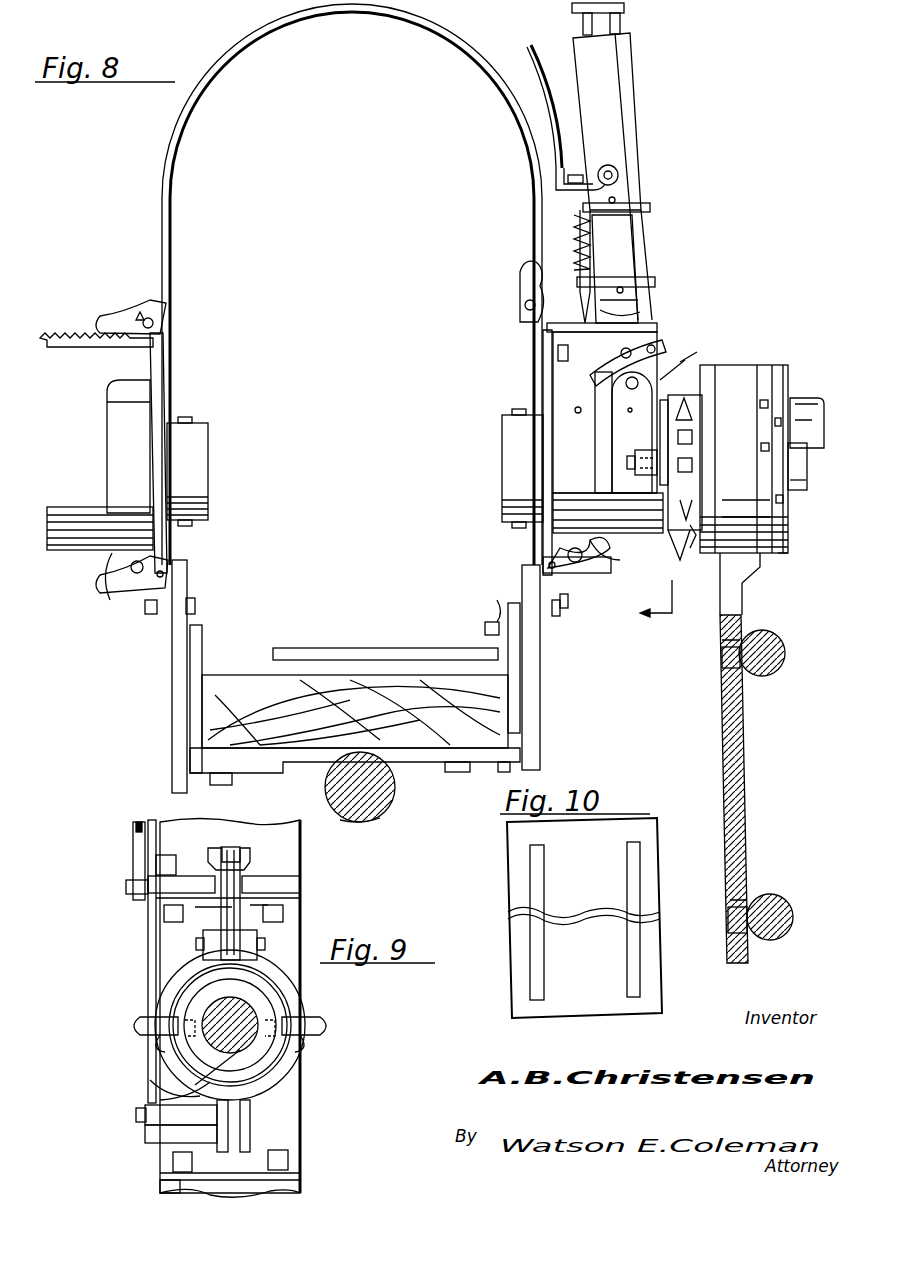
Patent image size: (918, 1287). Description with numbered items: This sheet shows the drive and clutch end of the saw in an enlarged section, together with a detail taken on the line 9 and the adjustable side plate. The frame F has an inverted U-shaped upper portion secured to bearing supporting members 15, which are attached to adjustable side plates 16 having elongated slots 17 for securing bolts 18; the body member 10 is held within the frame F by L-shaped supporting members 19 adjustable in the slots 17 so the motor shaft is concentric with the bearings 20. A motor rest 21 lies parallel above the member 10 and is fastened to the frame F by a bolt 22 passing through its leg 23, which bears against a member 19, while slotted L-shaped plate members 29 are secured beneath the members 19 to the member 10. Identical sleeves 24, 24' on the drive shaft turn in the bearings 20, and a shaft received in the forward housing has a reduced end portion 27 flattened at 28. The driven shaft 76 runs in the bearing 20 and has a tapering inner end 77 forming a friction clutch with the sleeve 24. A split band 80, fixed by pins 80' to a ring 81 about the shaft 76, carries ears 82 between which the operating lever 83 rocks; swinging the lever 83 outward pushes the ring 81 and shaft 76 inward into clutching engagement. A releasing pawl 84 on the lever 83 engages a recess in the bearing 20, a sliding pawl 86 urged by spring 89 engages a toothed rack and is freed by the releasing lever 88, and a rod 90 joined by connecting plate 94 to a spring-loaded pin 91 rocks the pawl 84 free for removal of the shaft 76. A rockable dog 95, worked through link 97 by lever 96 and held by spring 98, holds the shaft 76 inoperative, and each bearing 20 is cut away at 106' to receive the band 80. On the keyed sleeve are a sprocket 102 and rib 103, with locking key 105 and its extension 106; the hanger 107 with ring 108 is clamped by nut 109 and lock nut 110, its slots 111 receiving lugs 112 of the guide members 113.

In FIG. 8, the frame F is at (172, 222).
In FIG. 9, the frame F is at (300, 832).
In FIG. 8, the section line 9— 9 is at (672, 480).
In FIG. 8, the supporting frame or platform 10 is at (235, 675).
In FIG. 8, the bearing supporting members 15 is at (148, 616).
In FIG. 9, the bearing supporting members 15 is at (290, 1135).
In FIG. 8, the adjustable side plates 16 is at (540, 738).
In FIG. 10, the adjustable side plates 16 is at (590, 985).
In FIG. 9, the adjustable side plates 16 is at (302, 1178).
In FIG. 10, the elongated slots 17 is at (530, 875).
In FIG. 9, the elongated slots 17 is at (160, 1192).
In FIG. 8, the securing bolts 18 is at (570, 600).
In FIG. 8, the L-shaped supporting members 19 is at (190, 693).
In FIG. 8, the bearings 20 is at (75, 560).
In FIG. 9, the bearings 20 is at (195, 1083).
In FIG. 8, the motor rest 21 is at (360, 648).
In FIG. 8, the bolt 22 is at (485, 630).
In FIG. 8, the leg or flange 23 is at (481, 607).
In FIG. 8, the sleeve 24 is at (502, 468).
In FIG. 8, the sleeve 24' is at (188, 453).
In FIG. 8, the reduced outer end portion 27 is at (380, 822).
In FIG. 8, the flattened upper surface 28 is at (395, 780).
In FIG. 8, the adjustable L-shaped plate members 29 is at (465, 762).
In FIG. 8, the driven shaft 76 is at (810, 458).
In FIG. 9, the driven shaft 76 is at (255, 1008).
In FIG. 8, the inner end 77 is at (600, 485).
In FIG. 8, the split collar or band 80 is at (590, 432).
In FIG. 9, the split collar or band 80 is at (207, 1025).
In FIG. 8, the securing pins 80' is at (610, 463).
In FIG. 9, the securing pins 80' is at (228, 1037).
In FIG. 8, the ring 81 is at (660, 438).
In FIG. 9, the ring 81 is at (280, 1080).
In FIG. 8, the upstanding ears 82 is at (668, 400).
In FIG. 8, the operating lever 83 is at (620, 133).
In FIG. 9, the operating lever 83 is at (235, 847).
In FIG. 8, the releasing pawl 84 is at (590, 378).
In FIG. 9, the releasing pawl 84 is at (215, 950).
In FIG. 8, the longitudinally movable pawl 86 is at (558, 200).
In FIG. 8, the releasing lever 88 is at (543, 68).
In FIG. 8, the spring 89 is at (574, 238).
In FIG. 8, the rod 90 is at (645, 256).
In FIG. 9, the rod 90 is at (300, 873).
In FIG. 8, the pin 91 is at (583, 24).
In FIG. 8, the connecting plate 94 is at (628, 8).
In FIG. 8, the rockable dog 95 is at (612, 560).
In FIG. 9, the rockable dog 95 is at (178, 1130).
In FIG. 8, the operating lever 96 is at (100, 314).
In FIG. 9, the operating lever 96 is at (133, 832).
In FIG. 8, the connecting link 97 is at (168, 378).
In FIG. 9, the connecting link 97 is at (148, 946).
In FIG. 8, the spring 98 is at (606, 354).
In FIG. 9, the spring 98 is at (126, 887).
In FIG. 8, the sprocket member 102 is at (684, 548).
In FIG. 8, the rib 103 is at (706, 566).
In FIG. 8, the locking key 105 is at (800, 400).
In FIG. 8, the extension 106 is at (813, 469).
In FIG. 8, the cut-away portion 106' is at (100, 505).
In FIG. 9, the cut-away portion 106' is at (146, 1073).
In FIG. 8, the saw guide supporting arm 107 is at (722, 713).
In FIG. 8, the ring or bearing member 108 is at (740, 370).
In FIG. 8, the nut 109 is at (756, 562).
In FIG. 8, the lock nut 110 is at (784, 556).
In FIG. 8, the spaced slots 111 is at (720, 635).
In FIG. 8, the lugs 112 is at (722, 657).
In FIG. 8, the guide members 113 is at (782, 672).